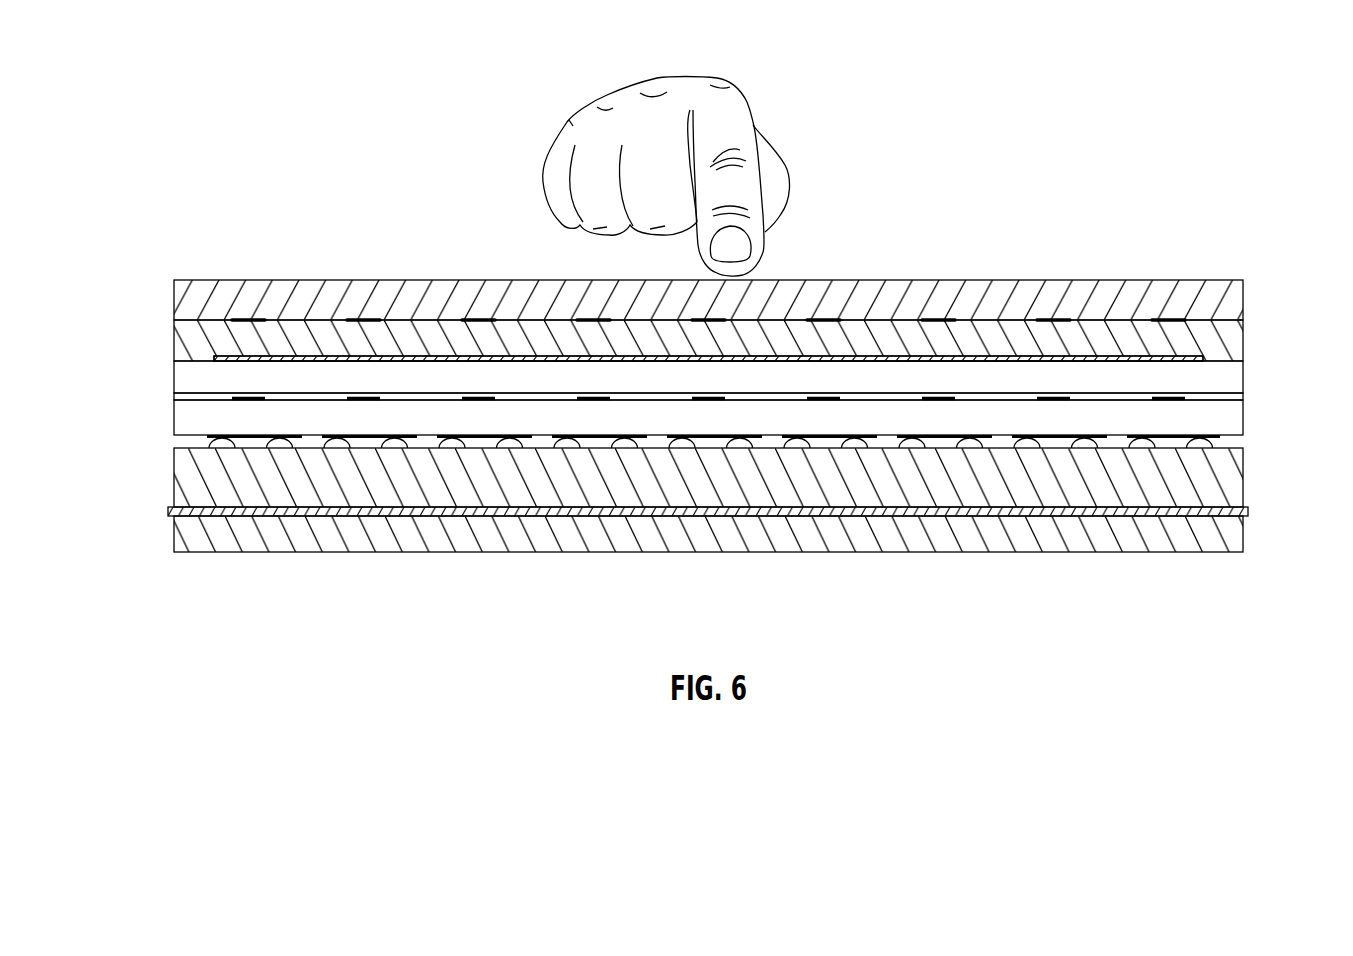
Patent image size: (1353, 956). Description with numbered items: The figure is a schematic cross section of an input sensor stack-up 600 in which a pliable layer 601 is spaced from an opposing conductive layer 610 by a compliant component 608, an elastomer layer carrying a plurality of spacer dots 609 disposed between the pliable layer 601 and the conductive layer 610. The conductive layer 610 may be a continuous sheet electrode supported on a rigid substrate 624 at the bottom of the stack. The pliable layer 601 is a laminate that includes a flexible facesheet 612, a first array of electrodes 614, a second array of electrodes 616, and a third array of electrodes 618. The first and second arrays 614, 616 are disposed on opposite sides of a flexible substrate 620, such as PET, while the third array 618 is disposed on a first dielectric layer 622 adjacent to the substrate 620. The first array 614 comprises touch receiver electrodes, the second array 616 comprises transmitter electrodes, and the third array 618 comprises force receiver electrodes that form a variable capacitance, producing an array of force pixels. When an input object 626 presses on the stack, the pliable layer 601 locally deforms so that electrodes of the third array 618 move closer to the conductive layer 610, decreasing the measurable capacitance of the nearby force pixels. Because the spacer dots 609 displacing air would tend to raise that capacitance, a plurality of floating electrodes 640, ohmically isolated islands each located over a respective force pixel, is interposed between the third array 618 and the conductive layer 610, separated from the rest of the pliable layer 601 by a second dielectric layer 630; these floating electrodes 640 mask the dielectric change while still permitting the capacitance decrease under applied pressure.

The input sensor stack-up 600 is at (172, 84).
The pliable layer 601 is at (162, 282).
The compliant component (elastomer layer) 608 is at (1243, 478).
The spacer dots 609 is at (277, 437).
The conductive layer 610 is at (1248, 512).
The flexible facesheet 612 is at (1243, 300).
The first array of electrodes 614 is at (1168, 320).
The second array of electrodes 616 is at (1090, 357).
The third array of electrodes 618 is at (942, 396).
The flexible substrate 620 is at (1243, 340).
The first dielectric layer 622 is at (1243, 377).
The rigid substrate 624 is at (1243, 533).
The input object 626 is at (767, 243).
The second dielectric layer 630 is at (1243, 415).
The floating electrodes 640 is at (572, 437).